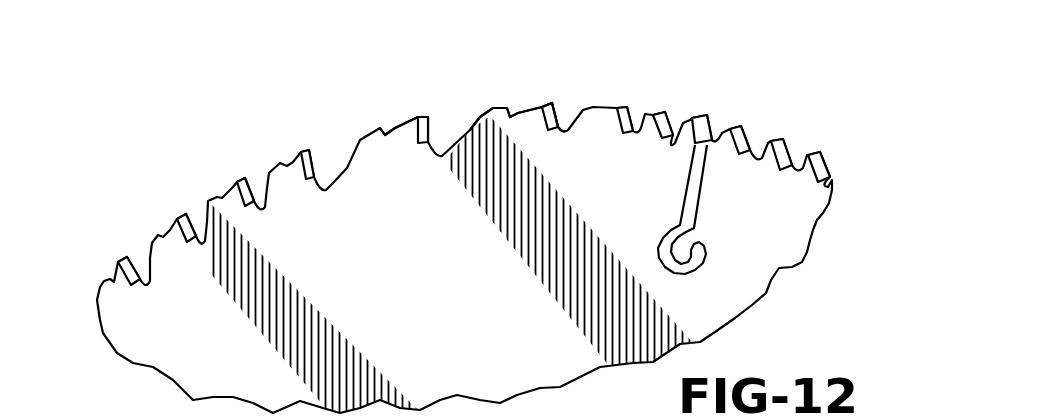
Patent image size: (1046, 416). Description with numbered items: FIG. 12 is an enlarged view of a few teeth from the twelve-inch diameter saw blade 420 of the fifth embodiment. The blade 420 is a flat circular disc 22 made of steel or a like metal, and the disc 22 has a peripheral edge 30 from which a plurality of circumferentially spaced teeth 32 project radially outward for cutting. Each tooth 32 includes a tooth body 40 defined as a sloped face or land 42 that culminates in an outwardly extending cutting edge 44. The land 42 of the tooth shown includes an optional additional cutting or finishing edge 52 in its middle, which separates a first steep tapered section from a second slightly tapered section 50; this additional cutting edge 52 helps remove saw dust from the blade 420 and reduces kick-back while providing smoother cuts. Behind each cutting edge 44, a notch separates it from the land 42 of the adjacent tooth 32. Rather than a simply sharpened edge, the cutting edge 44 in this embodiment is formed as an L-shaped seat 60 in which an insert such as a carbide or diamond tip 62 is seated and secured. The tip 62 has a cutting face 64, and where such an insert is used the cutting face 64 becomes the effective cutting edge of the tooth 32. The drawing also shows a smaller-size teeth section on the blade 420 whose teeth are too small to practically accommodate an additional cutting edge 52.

The disc 22 is at (205, 347).
The peripheral edge 30 is at (335, 158).
The teeth 32 is at (347, 72).
The tooth body 40 is at (398, 130).
The land 42 is at (410, 133).
The cutting edge 44 is at (542, 108).
The second slightly tapered section 50 is at (530, 110).
The additional cutting edge 52 is at (487, 123).
The L-shaped seat 60 is at (555, 123).
The tip 62 is at (548, 107).
The cutting face 64 is at (558, 110).
The saw blade 420 is at (263, 97).